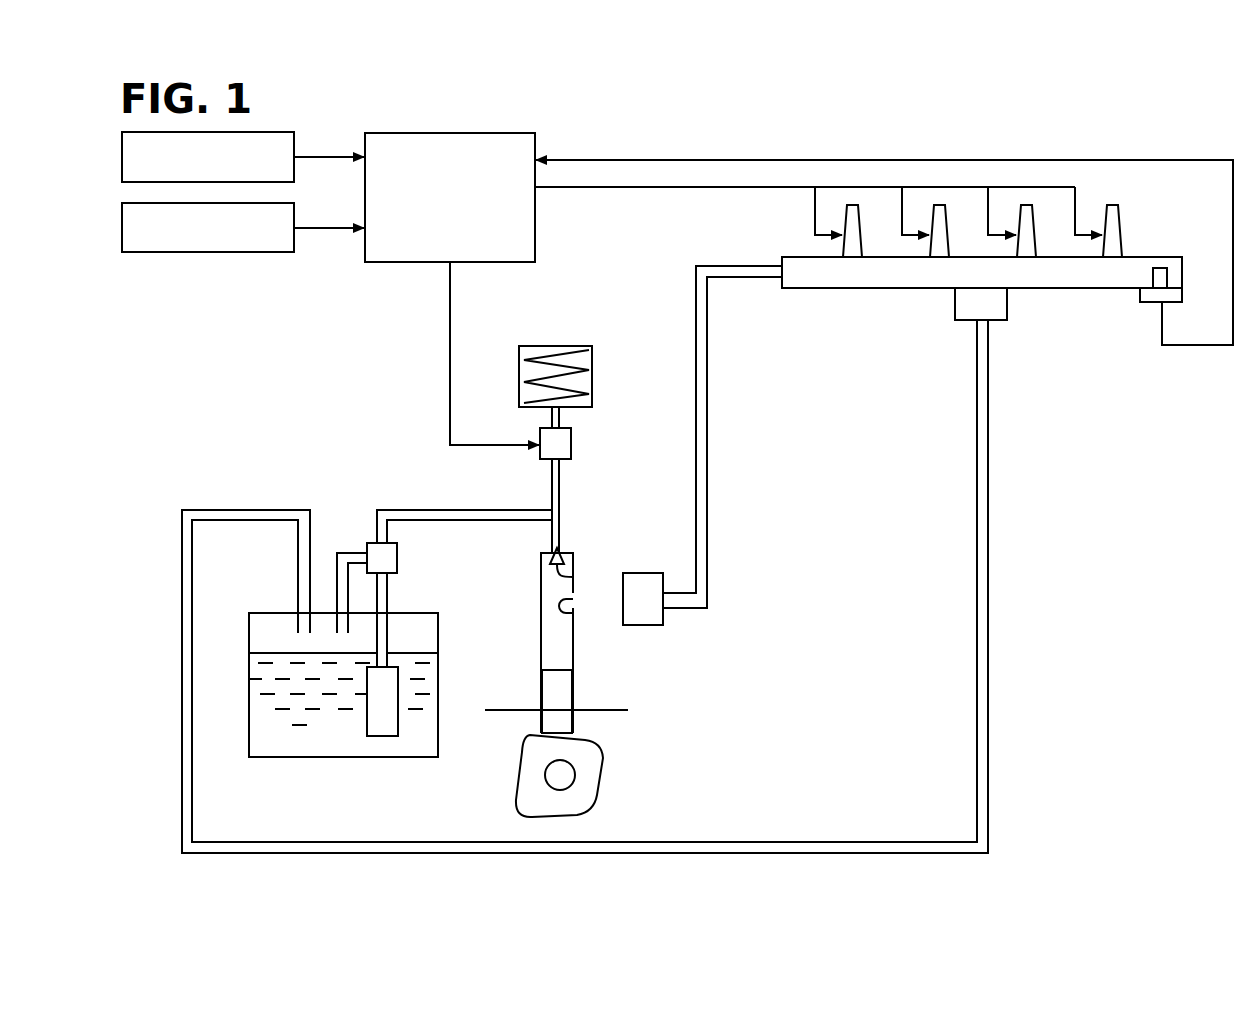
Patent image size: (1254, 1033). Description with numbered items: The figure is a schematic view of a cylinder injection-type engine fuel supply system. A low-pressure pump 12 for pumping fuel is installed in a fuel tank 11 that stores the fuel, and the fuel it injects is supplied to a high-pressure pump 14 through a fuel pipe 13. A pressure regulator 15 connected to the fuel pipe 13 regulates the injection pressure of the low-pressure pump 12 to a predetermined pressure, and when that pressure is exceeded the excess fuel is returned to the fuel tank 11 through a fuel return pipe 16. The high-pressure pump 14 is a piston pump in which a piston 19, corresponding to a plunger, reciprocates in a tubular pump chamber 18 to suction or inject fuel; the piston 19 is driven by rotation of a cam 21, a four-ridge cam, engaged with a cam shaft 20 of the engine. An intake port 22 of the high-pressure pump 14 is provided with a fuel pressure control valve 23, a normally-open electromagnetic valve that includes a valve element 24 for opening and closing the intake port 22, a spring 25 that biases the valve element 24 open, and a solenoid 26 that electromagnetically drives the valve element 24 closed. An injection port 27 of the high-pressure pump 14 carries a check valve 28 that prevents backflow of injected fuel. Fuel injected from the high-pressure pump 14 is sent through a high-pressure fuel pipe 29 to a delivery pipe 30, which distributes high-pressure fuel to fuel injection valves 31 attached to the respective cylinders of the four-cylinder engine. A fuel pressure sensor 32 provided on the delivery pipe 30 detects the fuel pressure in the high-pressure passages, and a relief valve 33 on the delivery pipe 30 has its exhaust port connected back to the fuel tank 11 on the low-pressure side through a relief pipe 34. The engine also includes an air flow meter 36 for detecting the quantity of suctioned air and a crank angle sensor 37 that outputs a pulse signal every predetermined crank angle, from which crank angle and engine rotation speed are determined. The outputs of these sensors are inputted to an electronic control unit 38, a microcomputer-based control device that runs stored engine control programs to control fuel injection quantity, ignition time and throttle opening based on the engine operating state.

The fuel tank 11 is at (275, 612).
The low-pressure pump 12 is at (367, 713).
The fuel pipe 13 is at (432, 510).
The high-pressure pump 14 is at (580, 684).
The pressure regulator 15 is at (371, 543).
The fuel return pipe 16 is at (338, 590).
The pump chamber 18 is at (548, 628).
The piston 19 is at (548, 690).
The cam shaft 20 is at (575, 772).
The cam 21 is at (597, 740).
The intake port 22 is at (548, 564).
The fuel pressure control valve 23 is at (577, 546).
The valve element 24 is at (573, 577).
The spring 25 is at (575, 365).
The solenoid 26 is at (571, 442).
The injection port 27 is at (573, 613).
The check valve 28 is at (663, 615).
The high-pressure fuel pipe 29 is at (707, 497).
The delivery pipe 30 is at (855, 290).
The fuel injection valves 31 is at (1122, 230).
The fuel pressure sensor 32 is at (1150, 302).
The relief valve 33 is at (1007, 305).
The relief pipe 34 is at (988, 492).
The air flow meter 36 is at (258, 252).
The crank angle sensor 37 is at (257, 132).
The electronic control unit (ECU) 38 is at (535, 228).